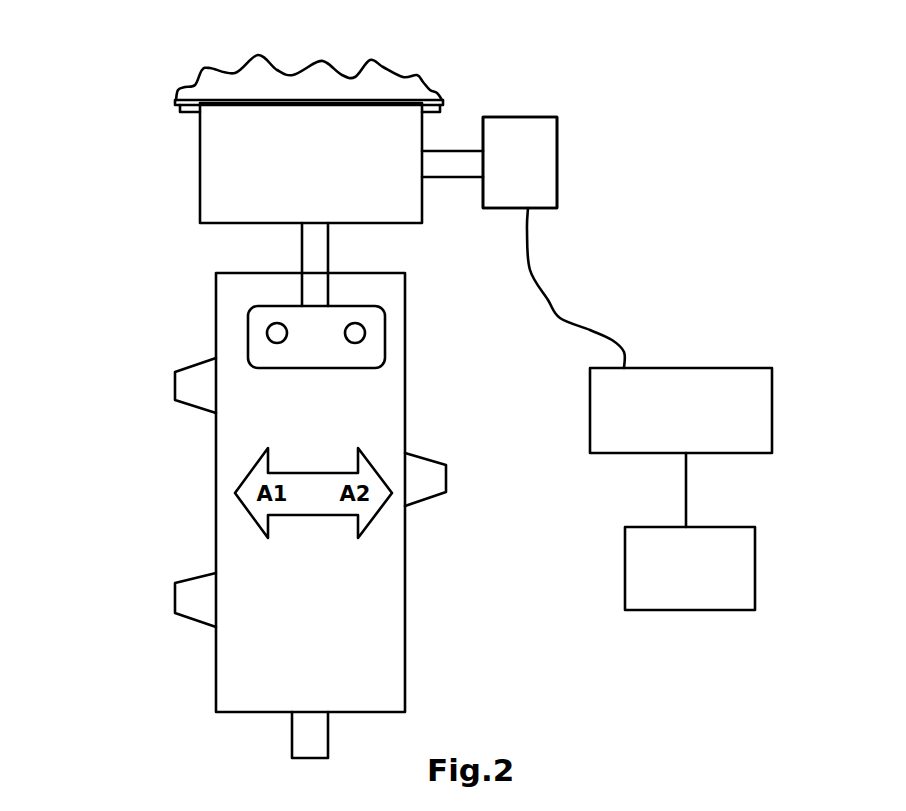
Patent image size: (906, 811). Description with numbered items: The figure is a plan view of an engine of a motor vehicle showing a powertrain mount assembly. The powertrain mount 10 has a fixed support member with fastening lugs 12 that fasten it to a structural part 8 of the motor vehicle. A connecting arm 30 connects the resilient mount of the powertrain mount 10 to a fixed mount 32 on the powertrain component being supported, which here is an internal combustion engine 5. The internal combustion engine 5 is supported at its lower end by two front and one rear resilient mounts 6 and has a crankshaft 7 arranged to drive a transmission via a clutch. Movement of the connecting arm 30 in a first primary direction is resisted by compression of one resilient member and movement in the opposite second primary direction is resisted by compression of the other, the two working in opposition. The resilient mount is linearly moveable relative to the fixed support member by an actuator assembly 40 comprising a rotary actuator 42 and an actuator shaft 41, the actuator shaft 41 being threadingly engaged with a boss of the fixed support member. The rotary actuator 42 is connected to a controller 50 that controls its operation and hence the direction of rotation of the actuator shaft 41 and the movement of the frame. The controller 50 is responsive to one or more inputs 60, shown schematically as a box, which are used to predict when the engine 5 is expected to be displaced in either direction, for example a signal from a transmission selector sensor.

The internal combustion engine 5 is at (408, 584).
The resilient mounts 6 is at (175, 386).
The crankshaft 7 is at (292, 735).
The structural part 8 is at (177, 90).
The powertrain mount 10 is at (199, 160).
The fastening lugs 12 is at (181, 113).
The connecting arm 30 is at (300, 251).
The fixed mount 32 is at (248, 336).
The actuator assembly 40 is at (553, 113).
The actuator shaft 41 is at (441, 179).
The rotary actuator 42 is at (518, 116).
The controller 50 is at (702, 366).
The inputs 60 is at (665, 612).